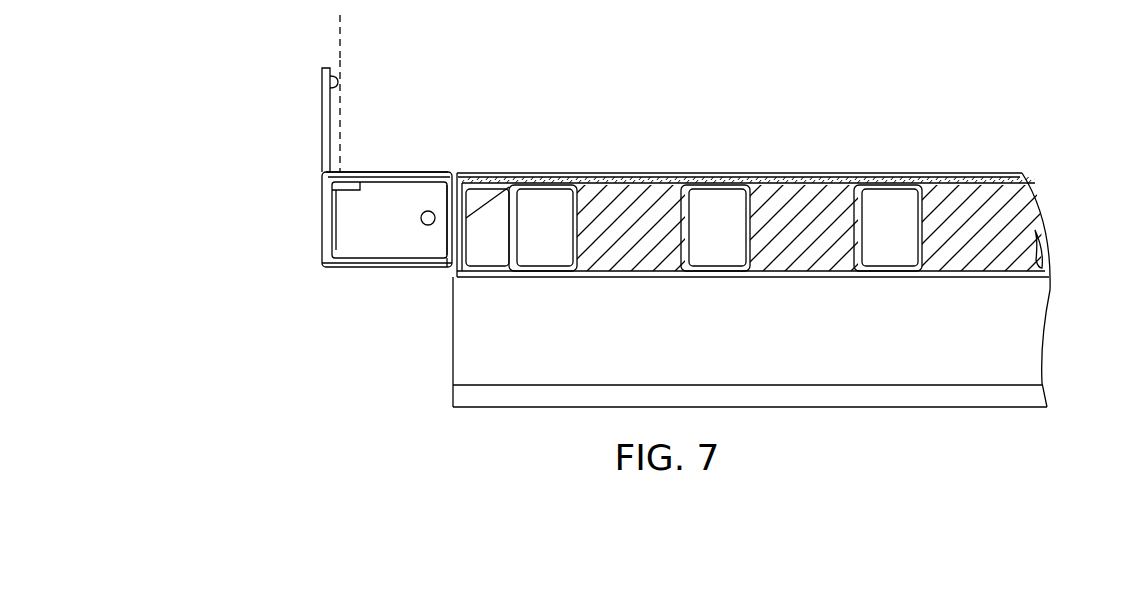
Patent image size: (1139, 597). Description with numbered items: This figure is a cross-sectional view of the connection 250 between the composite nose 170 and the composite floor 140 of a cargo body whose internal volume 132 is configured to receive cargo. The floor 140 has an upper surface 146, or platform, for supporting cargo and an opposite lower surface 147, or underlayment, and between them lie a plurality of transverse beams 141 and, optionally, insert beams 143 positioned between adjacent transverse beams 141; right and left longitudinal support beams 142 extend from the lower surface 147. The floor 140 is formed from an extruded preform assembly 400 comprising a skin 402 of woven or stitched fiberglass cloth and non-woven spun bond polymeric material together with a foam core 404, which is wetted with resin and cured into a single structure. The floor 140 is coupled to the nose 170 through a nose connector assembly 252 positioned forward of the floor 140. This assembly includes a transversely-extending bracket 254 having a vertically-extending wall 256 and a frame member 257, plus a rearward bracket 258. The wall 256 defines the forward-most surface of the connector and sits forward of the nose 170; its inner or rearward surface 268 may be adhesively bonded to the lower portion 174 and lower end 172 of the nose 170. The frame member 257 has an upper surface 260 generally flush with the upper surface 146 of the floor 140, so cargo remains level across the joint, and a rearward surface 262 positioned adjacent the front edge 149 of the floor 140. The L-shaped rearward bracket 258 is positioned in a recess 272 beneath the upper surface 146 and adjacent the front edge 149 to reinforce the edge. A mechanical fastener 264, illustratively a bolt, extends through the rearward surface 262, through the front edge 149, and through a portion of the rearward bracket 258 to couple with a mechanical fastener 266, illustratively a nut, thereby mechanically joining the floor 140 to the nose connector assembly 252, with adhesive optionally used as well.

The internal volume 132 is at (772, 111).
The floor 140 is at (1034, 163).
The transverse beams 141 is at (893, 232).
The longitudinal support beams 142 is at (1052, 318).
The insert beams 143 is at (830, 228).
The upper surface 146 is at (843, 177).
The lower surface 147 is at (790, 283).
The front edge 149 is at (463, 289).
The nose 170 is at (338, 30).
The lower end 172 is at (333, 174).
The lower portion 174 is at (348, 108).
The connection 250 is at (331, 347).
The nose connector assembly 252 is at (430, 98).
The transversely-extending bracket 254 is at (296, 236).
The vertically-extending wall 256 is at (332, 168).
The frame member 257 is at (324, 268).
The rearward bracket 258 is at (458, 258).
The upper surface 260 is at (433, 172).
The rearward surface 262 is at (456, 270).
The mechanical fastener 264 is at (447, 234).
The mechanical fastener 266 is at (572, 268).
The rearward surface 268 is at (322, 75).
The recess 272 is at (489, 232).
The extruded preform assembly 400 is at (711, 242).
The skin 402 is at (754, 195).
The foam core 404 is at (718, 205).